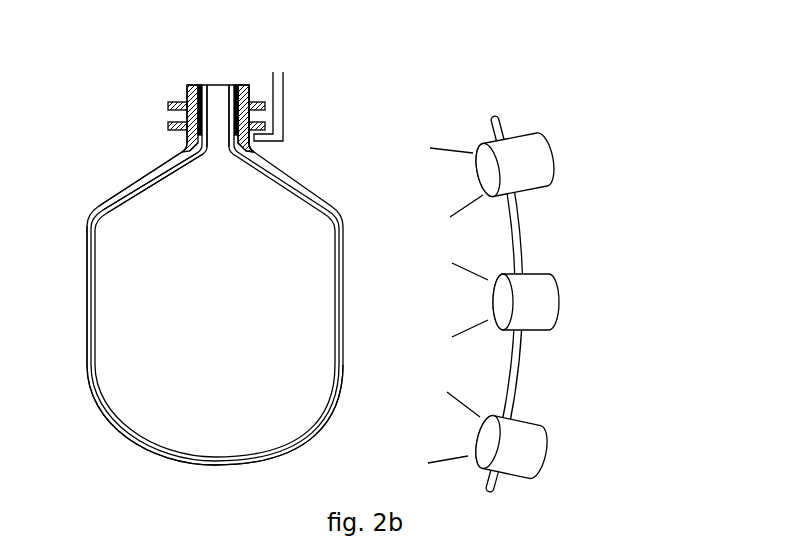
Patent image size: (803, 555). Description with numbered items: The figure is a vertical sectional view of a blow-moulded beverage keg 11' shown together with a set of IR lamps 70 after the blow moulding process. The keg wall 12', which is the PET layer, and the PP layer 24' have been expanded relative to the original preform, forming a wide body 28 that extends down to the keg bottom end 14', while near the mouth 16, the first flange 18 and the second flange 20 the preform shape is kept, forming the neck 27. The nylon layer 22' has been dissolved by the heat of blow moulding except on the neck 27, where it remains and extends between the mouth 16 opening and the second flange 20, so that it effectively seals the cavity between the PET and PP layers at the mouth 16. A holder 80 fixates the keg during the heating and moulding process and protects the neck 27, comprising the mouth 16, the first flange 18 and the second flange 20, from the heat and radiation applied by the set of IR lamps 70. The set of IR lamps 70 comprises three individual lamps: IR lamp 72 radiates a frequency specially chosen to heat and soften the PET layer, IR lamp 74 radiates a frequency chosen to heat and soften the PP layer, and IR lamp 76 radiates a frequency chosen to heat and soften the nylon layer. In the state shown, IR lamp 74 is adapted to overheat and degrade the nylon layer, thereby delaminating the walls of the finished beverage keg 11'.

The beverage keg 11' is at (175, 275).
The keg wall 12' is at (122, 168).
The keg bottom end 14' is at (191, 387).
The mouth 16 is at (220, 88).
The first flange 18 is at (168, 104).
The second flange 20 is at (168, 125).
The nylon layer 22' is at (169, 94).
The PP layer 24' is at (187, 74).
The neck 27 is at (243, 85).
The body 28 is at (88, 224).
The set of IR lamps 70 is at (600, 297).
The IR lamp 72 is at (532, 155).
The IR lamp 74 is at (543, 293).
The IR lamp 76 is at (525, 450).
The holder 80 is at (287, 110).